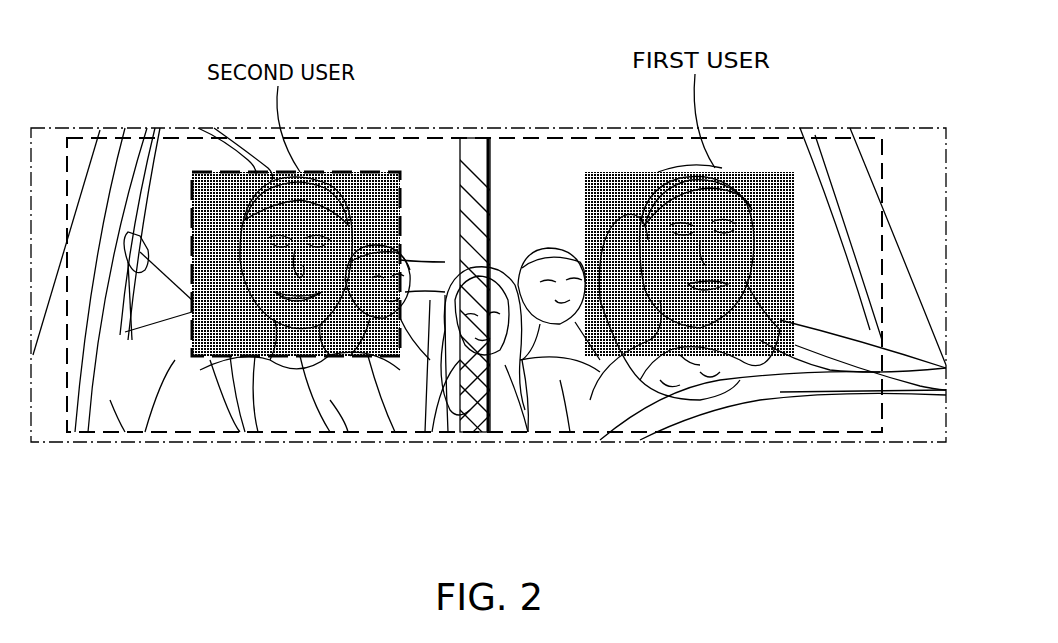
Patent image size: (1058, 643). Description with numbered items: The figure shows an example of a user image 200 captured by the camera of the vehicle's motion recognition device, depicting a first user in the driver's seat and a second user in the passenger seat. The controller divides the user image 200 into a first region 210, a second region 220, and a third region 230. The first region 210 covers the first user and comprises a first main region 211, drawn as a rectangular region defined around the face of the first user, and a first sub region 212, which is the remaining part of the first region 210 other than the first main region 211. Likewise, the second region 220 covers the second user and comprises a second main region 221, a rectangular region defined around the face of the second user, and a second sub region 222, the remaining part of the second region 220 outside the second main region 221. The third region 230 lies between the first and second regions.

The user image 200 is at (423, 128).
The first region 210 is at (740, 435).
The first main region 211 is at (622, 432).
The first sub region 212 is at (842, 405).
The second region 220 is at (372, 432).
The second main region 221 is at (243, 420).
The second sub region 222 is at (117, 400).
The third region 230 is at (476, 432).